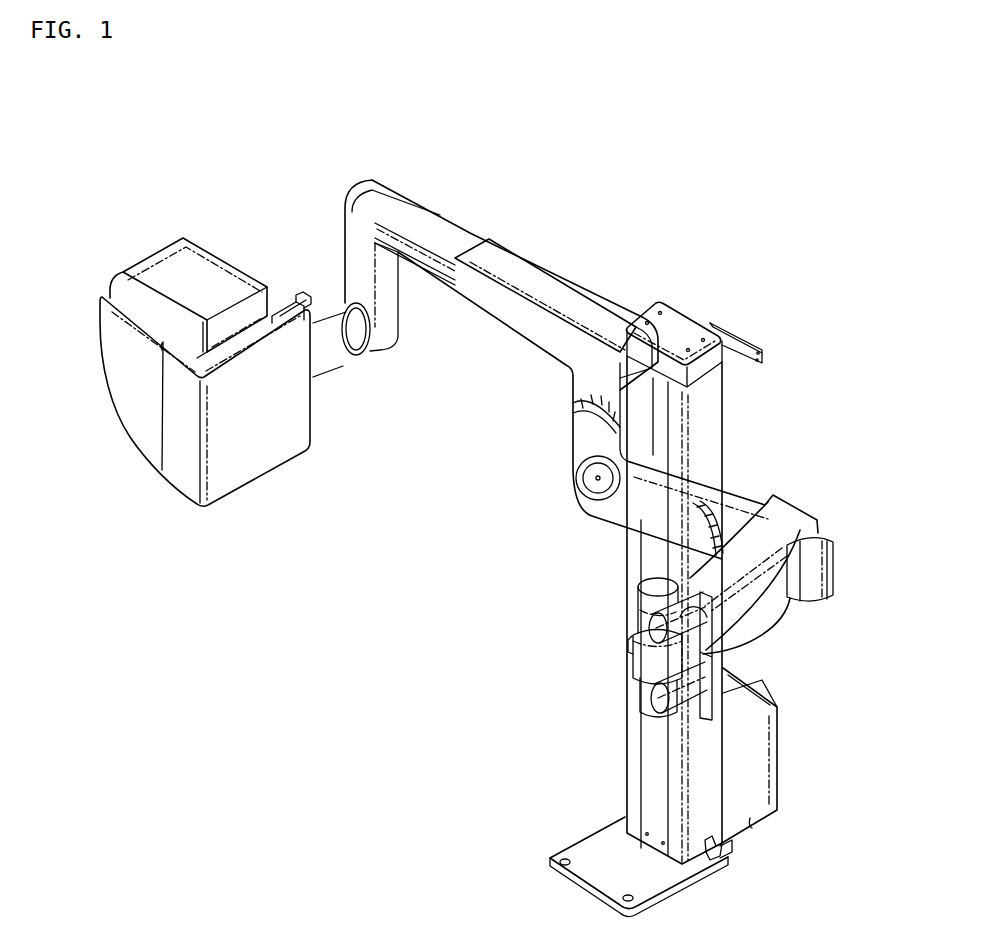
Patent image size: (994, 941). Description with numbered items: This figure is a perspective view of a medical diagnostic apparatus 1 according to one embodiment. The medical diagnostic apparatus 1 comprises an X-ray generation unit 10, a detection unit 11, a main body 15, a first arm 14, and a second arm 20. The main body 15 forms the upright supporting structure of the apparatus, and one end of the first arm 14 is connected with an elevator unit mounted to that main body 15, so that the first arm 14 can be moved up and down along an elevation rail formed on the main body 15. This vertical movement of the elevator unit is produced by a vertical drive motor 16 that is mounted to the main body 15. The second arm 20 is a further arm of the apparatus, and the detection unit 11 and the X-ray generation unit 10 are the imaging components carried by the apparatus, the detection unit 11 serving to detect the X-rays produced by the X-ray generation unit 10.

The medical diagnostic apparatus 1 is at (835, 330).
The X-ray generation unit 10 is at (644, 660).
The detection unit 11 is at (257, 462).
The first arm 14 is at (741, 502).
The main body 15 is at (704, 423).
The vertical drive motor 16 is at (762, 772).
The second arm 20 is at (553, 258).